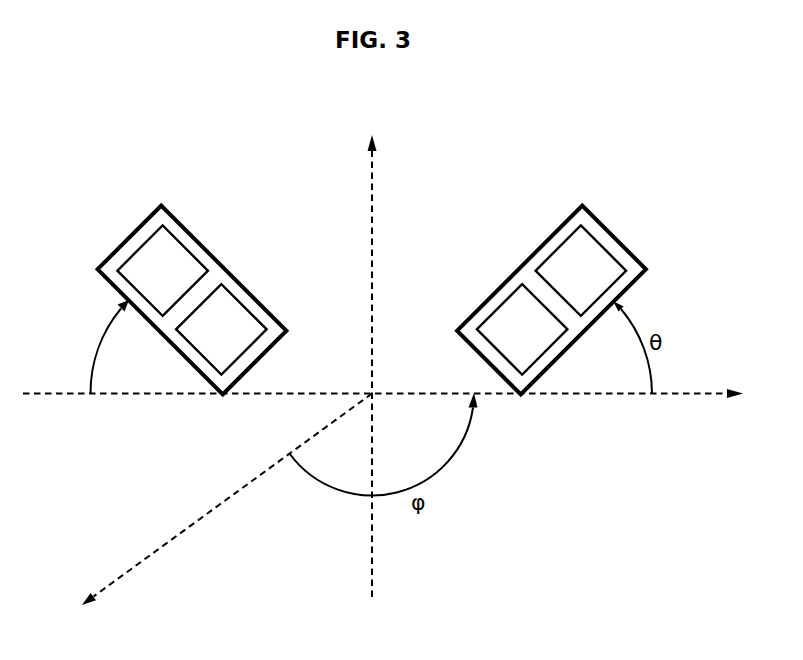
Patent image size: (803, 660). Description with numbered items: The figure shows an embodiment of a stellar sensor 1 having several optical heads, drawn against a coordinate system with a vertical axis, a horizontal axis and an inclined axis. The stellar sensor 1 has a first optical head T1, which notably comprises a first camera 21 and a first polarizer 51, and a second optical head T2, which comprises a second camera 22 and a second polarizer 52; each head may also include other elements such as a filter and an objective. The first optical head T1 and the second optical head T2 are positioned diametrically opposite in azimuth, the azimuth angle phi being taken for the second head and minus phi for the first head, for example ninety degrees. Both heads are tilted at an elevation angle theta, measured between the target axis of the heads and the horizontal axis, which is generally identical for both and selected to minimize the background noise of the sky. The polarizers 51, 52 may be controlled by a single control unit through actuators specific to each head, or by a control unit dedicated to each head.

The stellar sensor 1 is at (490, 161).
The first optical head T1 is at (193, 300).
The second optical head T2 is at (551, 300).
The first polarizer 51 is at (174, 280).
The first camera 21 is at (231, 336).
The second polarizer 52 is at (590, 280).
The second camera 22 is at (533, 336).